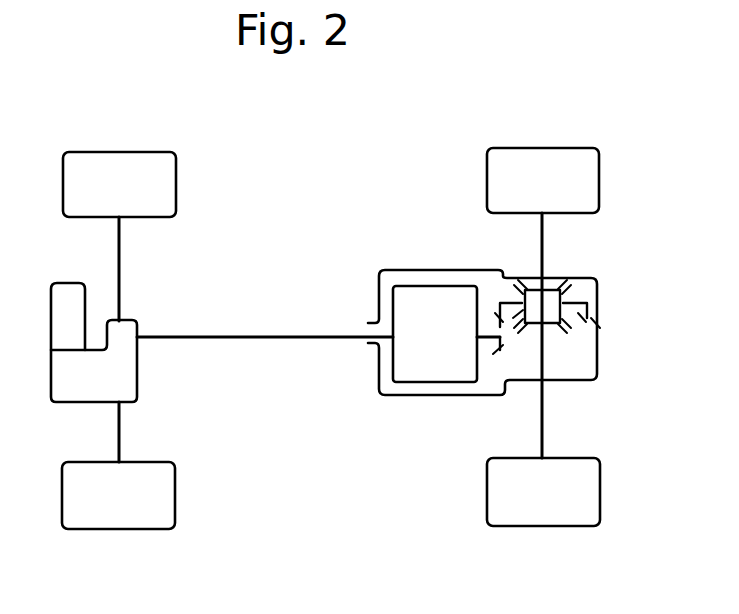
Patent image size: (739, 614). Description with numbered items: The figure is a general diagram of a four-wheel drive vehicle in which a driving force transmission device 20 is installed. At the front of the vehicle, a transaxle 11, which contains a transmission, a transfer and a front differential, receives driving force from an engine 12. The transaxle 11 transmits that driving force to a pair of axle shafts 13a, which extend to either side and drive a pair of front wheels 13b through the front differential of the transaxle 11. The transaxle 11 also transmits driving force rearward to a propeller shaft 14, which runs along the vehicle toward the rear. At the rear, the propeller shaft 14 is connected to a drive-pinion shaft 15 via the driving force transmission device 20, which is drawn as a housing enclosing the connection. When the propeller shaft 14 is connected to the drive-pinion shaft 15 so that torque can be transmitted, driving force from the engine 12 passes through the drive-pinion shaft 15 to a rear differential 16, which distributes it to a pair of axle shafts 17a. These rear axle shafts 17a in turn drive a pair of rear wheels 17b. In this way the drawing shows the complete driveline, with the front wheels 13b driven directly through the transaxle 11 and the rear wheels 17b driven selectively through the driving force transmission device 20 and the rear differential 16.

The transaxle 11 is at (130, 368).
The engine 12 is at (65, 300).
The axle shafts 13a is at (119, 260).
The front wheels 13b is at (117, 171).
The propeller shaft 14 is at (245, 337).
The drive-pinion shaft 15 is at (483, 338).
The rear differential 16 is at (578, 330).
The axle shafts 17a is at (542, 252).
The rear wheels 17b is at (540, 165).
The driving force transmission device 20 is at (422, 281).